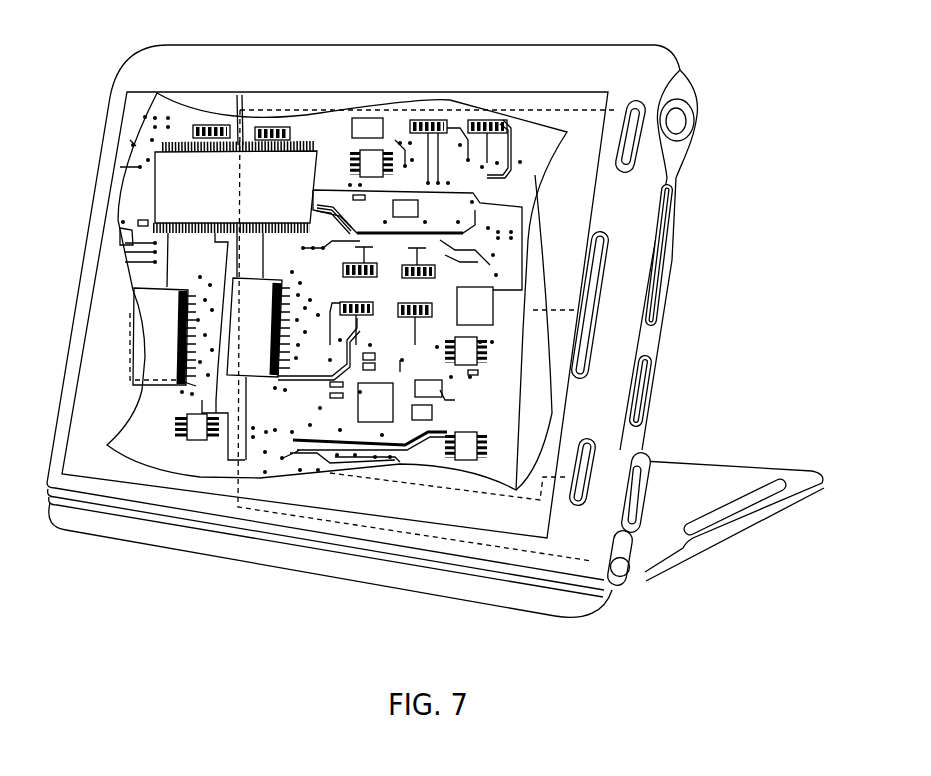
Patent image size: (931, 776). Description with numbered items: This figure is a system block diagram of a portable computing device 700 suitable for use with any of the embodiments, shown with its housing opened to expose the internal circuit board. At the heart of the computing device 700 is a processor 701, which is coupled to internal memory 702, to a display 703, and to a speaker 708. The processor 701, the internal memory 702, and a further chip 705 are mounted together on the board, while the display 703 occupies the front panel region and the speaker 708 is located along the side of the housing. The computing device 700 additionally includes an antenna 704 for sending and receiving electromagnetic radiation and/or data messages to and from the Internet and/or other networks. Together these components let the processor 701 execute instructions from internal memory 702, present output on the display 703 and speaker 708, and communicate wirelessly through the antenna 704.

The computing device 700 is at (627, 44).
The processor 701 is at (247, 193).
The internal memory 702 is at (177, 315).
The display 703 is at (476, 90).
The antenna 704 is at (630, 578).
The integrated circuit chip 705 is at (267, 323).
The speaker 708 is at (637, 142).